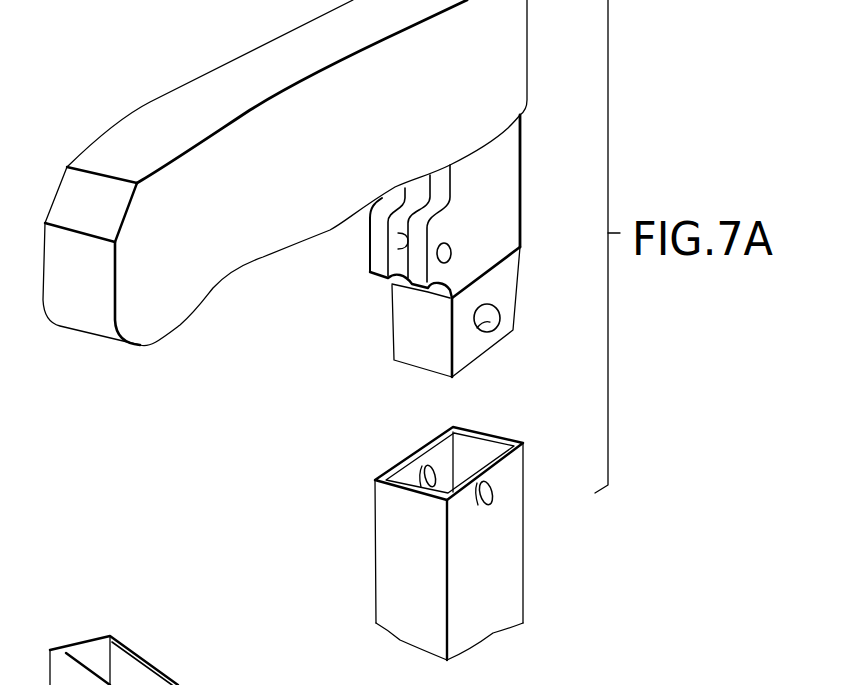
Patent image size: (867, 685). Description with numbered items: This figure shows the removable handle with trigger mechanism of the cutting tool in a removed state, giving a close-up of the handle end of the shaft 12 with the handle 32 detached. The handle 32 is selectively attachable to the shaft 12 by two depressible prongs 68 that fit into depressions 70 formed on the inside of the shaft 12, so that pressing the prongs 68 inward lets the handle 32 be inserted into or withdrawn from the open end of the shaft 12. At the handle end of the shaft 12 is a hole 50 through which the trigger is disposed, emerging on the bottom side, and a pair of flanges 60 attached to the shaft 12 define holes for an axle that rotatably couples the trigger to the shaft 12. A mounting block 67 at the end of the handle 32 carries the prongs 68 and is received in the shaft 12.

The handle 32 is at (190, 105).
The hole 50 is at (436, 257).
The flanges 60 is at (395, 288).
The mounting block 67 is at (516, 293).
The depressible prongs 68 is at (498, 336).
The shaft 12 is at (390, 580).
The depressions 70 is at (458, 493).